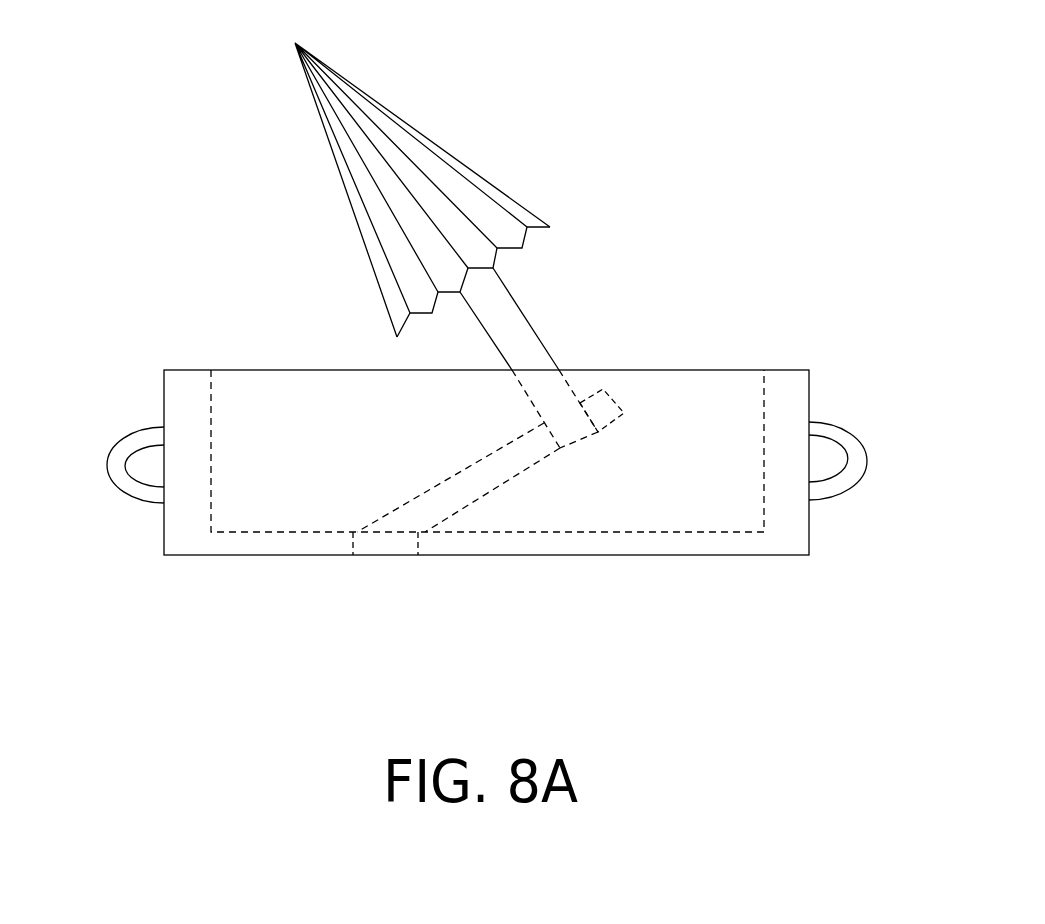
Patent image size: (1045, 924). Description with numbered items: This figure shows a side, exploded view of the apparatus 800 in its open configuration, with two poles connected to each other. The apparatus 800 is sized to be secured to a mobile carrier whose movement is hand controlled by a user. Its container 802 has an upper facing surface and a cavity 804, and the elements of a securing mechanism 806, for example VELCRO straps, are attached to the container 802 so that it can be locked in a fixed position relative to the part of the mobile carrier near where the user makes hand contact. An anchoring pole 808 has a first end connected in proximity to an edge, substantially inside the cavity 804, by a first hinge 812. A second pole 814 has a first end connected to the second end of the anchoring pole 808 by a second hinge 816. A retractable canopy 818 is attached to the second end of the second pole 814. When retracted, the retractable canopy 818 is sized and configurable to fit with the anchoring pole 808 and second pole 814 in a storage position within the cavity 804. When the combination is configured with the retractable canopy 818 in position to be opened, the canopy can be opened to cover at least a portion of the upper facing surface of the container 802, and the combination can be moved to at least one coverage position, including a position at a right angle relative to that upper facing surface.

The apparatus 800 is at (112, 417).
The container 802 is at (757, 555).
The cavity 804 is at (738, 383).
The securing mechanism 806 is at (113, 482).
The anchoring pole 808 is at (500, 487).
The first hinge 812 is at (383, 557).
The second pole 814 is at (528, 320).
The second hinge 816 is at (622, 413).
The retractable canopy 818 is at (428, 138).